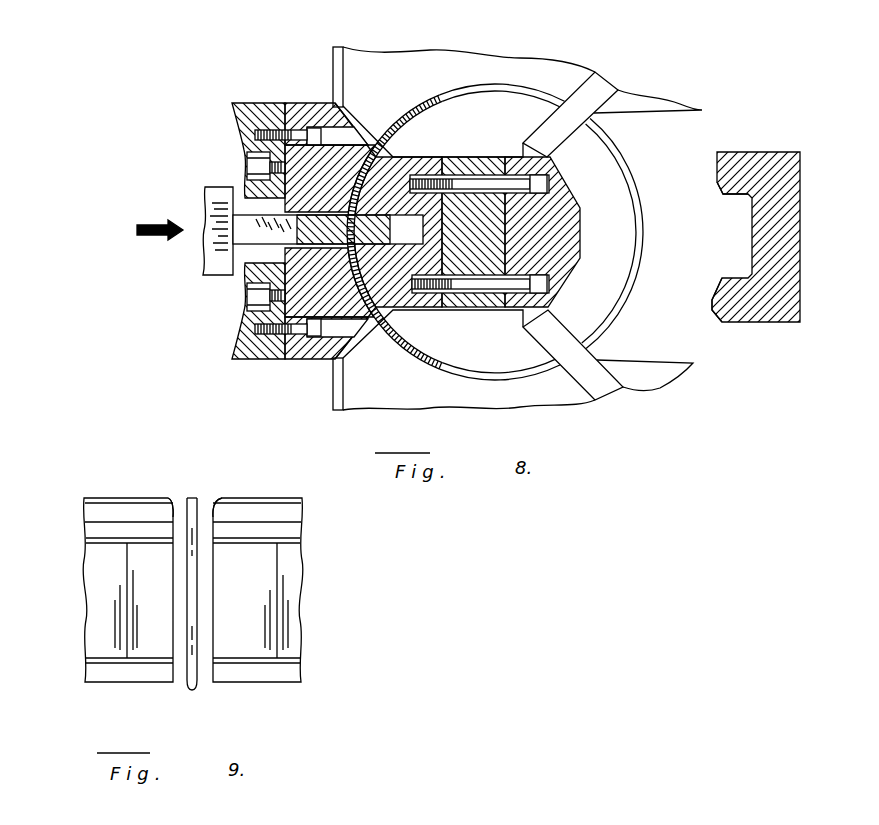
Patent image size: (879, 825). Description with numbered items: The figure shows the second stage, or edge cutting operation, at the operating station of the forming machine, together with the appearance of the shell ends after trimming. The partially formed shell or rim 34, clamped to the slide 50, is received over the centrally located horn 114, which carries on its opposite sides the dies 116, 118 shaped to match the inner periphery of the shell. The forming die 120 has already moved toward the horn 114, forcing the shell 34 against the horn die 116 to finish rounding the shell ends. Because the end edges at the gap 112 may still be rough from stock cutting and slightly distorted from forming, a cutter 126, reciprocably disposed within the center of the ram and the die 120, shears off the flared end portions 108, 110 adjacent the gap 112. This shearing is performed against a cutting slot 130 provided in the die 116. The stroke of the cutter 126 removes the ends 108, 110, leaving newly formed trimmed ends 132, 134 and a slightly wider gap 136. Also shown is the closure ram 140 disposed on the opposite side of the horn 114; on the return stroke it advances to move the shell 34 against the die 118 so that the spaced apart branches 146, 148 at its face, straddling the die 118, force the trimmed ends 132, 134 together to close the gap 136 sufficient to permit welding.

In FIG. 8, the shell or rim 34 is at (624, 156).
In FIG. 9, the shell or rim 34 is at (90, 577).
In FIG. 8, the slide 50 is at (560, 56).
In FIG. 9, the flared end 108 is at (183, 689).
In FIG. 9, the flared end 110 is at (202, 689).
In FIG. 9, the gap 112 is at (197, 591).
In FIG. 8, the horn 114 is at (470, 298).
In FIG. 8, the horn die 116 is at (405, 293).
In FIG. 8, the die 118 is at (557, 257).
In FIG. 8, the forming die 120 is at (312, 108).
In FIG. 8, the cutter 126 is at (329, 240).
In FIG. 8, the cutting slot 130 is at (383, 217).
In FIG. 9, the trimmed end 132 is at (178, 497).
In FIG. 9, the trimmed end 134 is at (207, 497).
In FIG. 9, the trimmed end gap 136 is at (197, 494).
In FIG. 8, the closure ram 140 is at (764, 318).
In FIG. 8, the branch 146 is at (718, 176).
In FIG. 8, the branch 148 is at (715, 300).